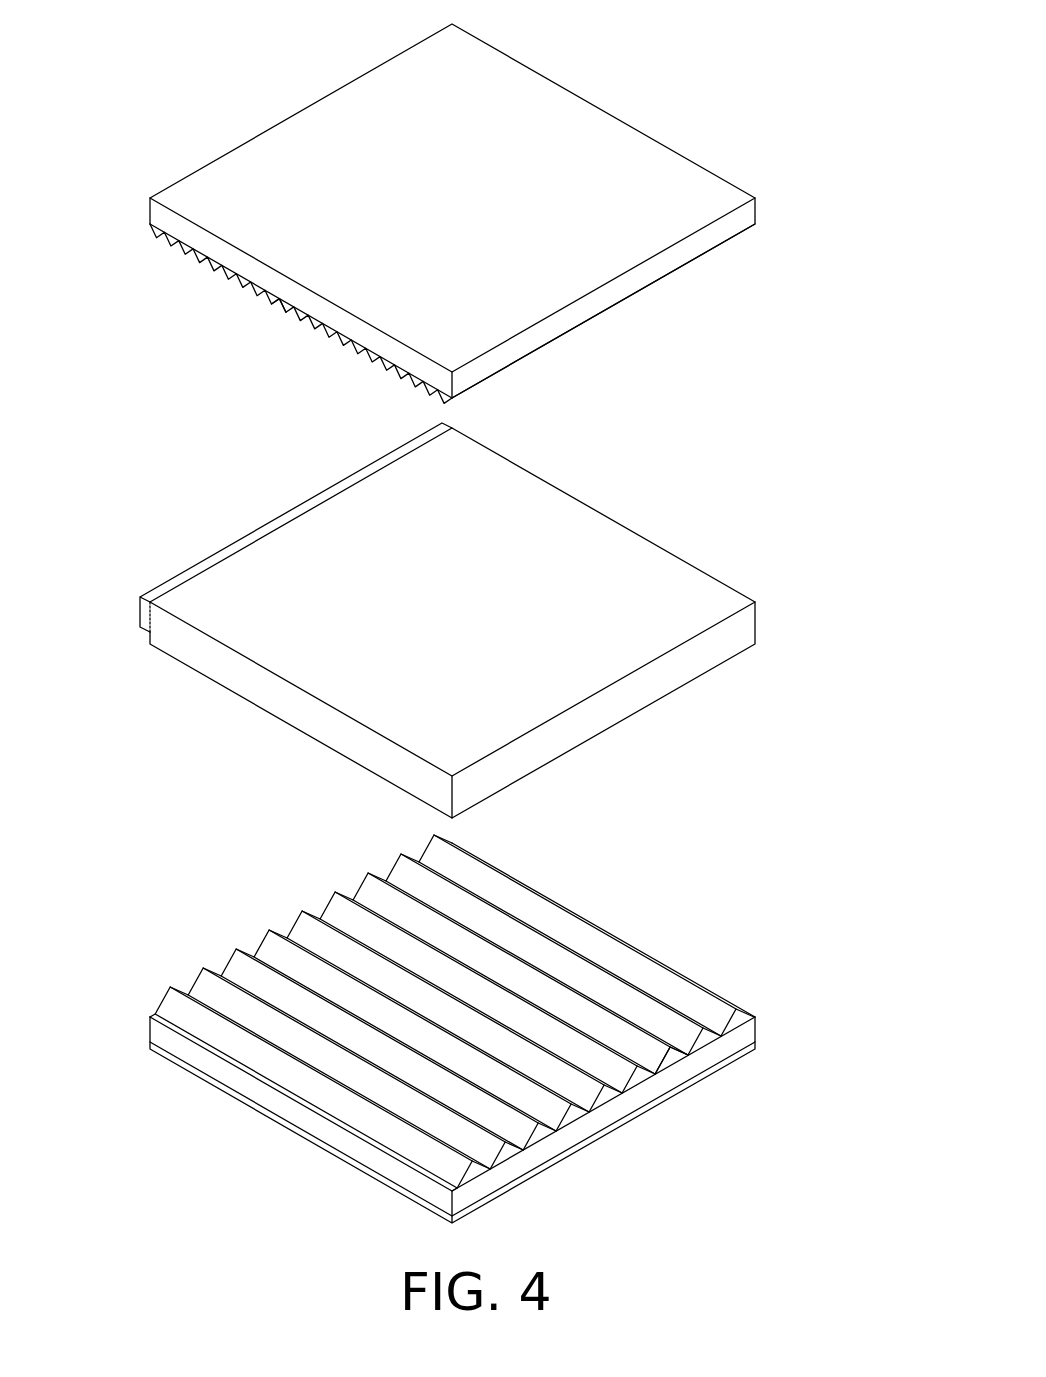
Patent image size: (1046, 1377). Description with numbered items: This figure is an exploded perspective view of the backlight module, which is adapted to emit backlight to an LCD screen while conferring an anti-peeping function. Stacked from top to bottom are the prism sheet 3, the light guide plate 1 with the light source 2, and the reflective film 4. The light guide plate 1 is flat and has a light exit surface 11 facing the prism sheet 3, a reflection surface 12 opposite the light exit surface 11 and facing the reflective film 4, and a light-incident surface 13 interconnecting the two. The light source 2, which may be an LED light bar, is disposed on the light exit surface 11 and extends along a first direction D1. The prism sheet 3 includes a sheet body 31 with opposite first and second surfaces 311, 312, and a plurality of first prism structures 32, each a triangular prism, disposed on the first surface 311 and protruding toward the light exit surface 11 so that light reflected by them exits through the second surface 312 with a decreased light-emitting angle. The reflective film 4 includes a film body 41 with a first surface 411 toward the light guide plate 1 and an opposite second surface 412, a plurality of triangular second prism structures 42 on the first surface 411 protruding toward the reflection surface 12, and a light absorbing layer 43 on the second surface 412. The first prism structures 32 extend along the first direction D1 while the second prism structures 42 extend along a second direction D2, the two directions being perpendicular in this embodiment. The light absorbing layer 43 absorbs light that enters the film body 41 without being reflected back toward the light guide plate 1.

The light guide plate 1 is at (429, 623).
The light exit surface 11 is at (645, 572).
The reflection surface 12 is at (677, 688).
The light-incident surface 13 is at (148, 622).
The light source 2 is at (177, 577).
The prism sheet 3 is at (483, 216).
The sheet body 31 is at (718, 232).
The first surface 311 is at (678, 265).
The second surface 312 is at (612, 152).
The first prism structures 32 is at (333, 333).
The reflective film 4 is at (487, 1043).
The film body 41 is at (452, 1043).
The first surface 411 is at (452, 1030).
The second surface 412 is at (548, 1162).
The second prism structures 42 is at (305, 935).
The light absorbing layer 43 is at (735, 1062).
The first direction D1 is at (88, 78).
The second direction D2 is at (88, 21).